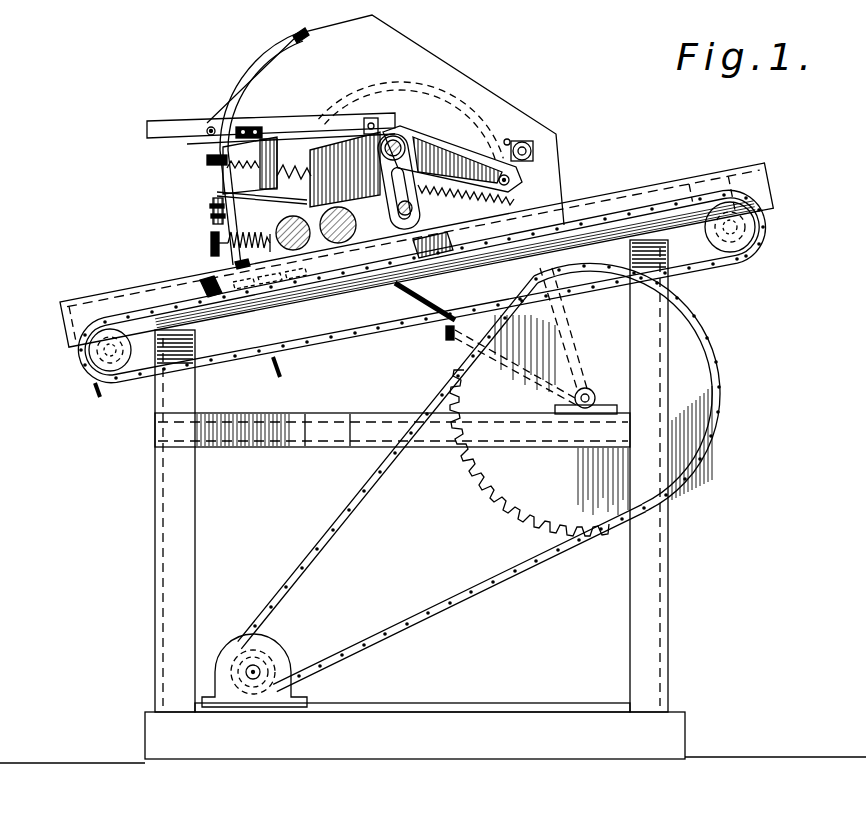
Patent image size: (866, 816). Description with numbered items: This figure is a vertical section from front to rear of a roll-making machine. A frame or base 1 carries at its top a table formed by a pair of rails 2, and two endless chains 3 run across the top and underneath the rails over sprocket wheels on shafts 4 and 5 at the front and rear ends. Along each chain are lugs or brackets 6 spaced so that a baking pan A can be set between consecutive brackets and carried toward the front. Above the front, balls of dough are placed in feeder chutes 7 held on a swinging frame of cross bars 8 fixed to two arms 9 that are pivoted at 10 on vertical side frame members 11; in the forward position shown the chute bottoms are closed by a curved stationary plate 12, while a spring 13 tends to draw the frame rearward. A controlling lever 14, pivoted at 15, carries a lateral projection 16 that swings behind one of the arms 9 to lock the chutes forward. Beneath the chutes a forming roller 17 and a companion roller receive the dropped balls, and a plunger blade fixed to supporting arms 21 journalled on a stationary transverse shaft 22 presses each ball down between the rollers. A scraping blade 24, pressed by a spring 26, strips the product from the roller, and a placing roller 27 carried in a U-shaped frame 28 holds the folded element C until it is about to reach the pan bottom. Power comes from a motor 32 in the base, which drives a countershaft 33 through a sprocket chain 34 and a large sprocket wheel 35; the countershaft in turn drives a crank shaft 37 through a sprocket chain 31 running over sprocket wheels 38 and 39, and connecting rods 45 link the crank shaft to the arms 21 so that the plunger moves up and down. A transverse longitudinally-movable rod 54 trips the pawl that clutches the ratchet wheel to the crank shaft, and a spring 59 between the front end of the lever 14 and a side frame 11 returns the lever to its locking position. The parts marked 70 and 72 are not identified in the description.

The frame or base 1 is at (166, 503).
The rails 2 is at (261, 302).
The endless chains 3 is at (365, 326).
The shaft 4 is at (82, 372).
The shaft 5 is at (768, 226).
The lugs or brackets 6 is at (182, 293).
The feeder chutes 7 is at (280, 140).
The cross bars 8 is at (207, 162).
The arms 9 is at (258, 66).
The pivot 10 is at (306, 30).
The vertical side frame members 11 is at (410, 53).
The curved stationary plate 12 is at (212, 203).
The spring 13 is at (300, 146).
The controlling lever 14 is at (160, 120).
The pivot 15 is at (370, 119).
The lateral projection 16 is at (252, 127).
The forming roller 17 is at (349, 191).
The supporting arms 21 is at (404, 120).
The stationary transverse shaft 22 is at (511, 180).
The scraping blade 24 is at (225, 268).
The spring 26 is at (240, 233).
The placing roller 27 is at (265, 303).
The U-shaped frame 28 is at (391, 219).
The sprocket chain 31 is at (417, 311).
The motor 32 is at (282, 652).
The countershaft 33 is at (590, 388).
The sprocket chain 34 is at (368, 492).
The large sprocket wheel 35 is at (515, 500).
The crank shaft 37 is at (466, 200).
The sprocket wheel 38 is at (521, 337).
The sprocket wheel 39 is at (450, 140).
The connecting rods 45 is at (447, 143).
The transverse longitudinally-movable rod 54 is at (524, 141).
The spring 59 is at (205, 137).
The slat 70 is at (435, 243).
The pin 72 is at (507, 139).
The baking pan A is at (357, 286).
The folded element C is at (277, 301).